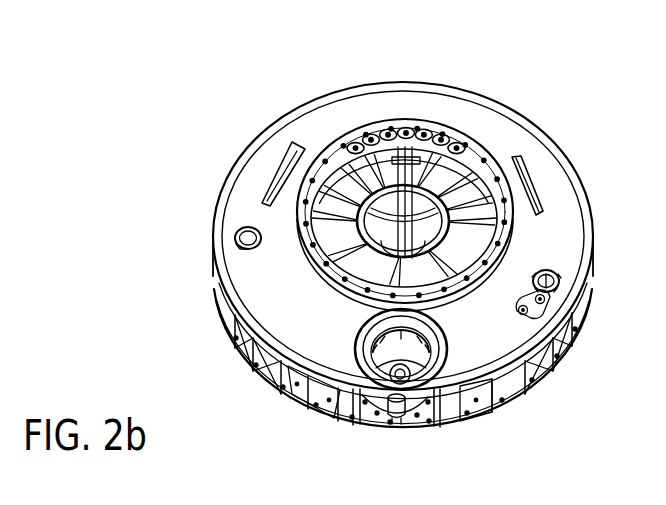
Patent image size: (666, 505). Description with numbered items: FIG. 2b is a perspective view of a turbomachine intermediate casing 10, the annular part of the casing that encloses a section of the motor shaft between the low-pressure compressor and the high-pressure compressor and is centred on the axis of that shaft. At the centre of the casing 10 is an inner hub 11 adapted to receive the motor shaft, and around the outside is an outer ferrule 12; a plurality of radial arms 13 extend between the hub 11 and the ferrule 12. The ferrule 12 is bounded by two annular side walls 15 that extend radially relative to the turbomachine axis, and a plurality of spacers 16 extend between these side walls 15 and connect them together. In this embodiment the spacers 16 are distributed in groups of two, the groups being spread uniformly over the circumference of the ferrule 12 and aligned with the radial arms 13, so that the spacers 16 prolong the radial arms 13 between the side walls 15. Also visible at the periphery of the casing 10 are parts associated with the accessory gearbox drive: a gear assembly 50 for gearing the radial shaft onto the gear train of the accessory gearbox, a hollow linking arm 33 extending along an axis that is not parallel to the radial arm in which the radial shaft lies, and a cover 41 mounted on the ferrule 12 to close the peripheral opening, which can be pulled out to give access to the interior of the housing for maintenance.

The intermediate casing 10 is at (178, 82).
The inner hub 11 is at (385, 188).
The outer ferrule 12 is at (553, 178).
The radial arms 13 is at (467, 190).
The annular side walls 15 is at (585, 278).
The spacers 16 is at (565, 383).
The linking arm 33 is at (367, 412).
The cover 41 is at (415, 407).
The gear assembly 50 is at (318, 406).